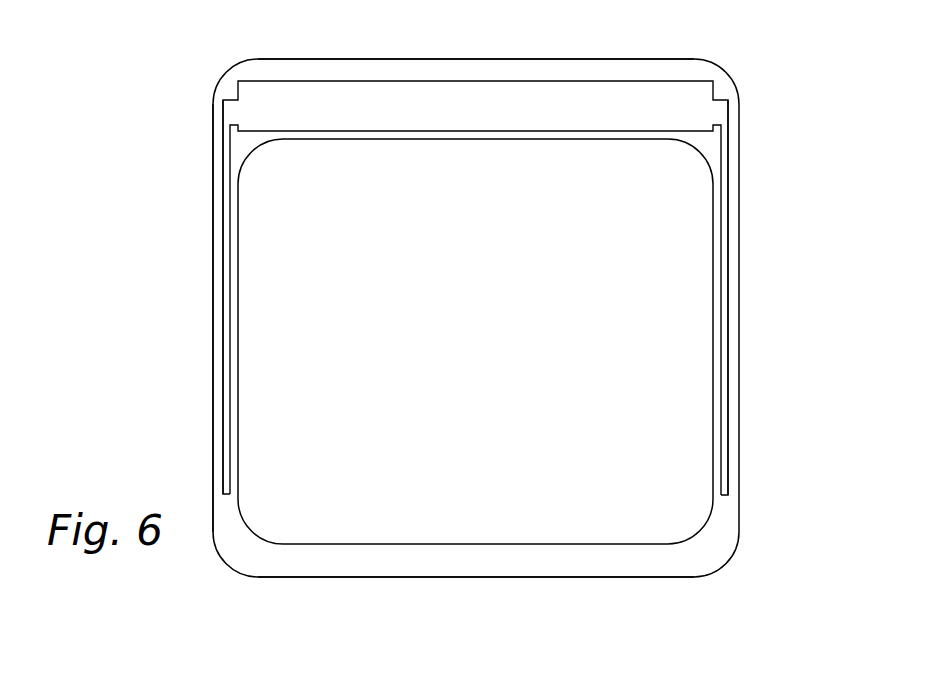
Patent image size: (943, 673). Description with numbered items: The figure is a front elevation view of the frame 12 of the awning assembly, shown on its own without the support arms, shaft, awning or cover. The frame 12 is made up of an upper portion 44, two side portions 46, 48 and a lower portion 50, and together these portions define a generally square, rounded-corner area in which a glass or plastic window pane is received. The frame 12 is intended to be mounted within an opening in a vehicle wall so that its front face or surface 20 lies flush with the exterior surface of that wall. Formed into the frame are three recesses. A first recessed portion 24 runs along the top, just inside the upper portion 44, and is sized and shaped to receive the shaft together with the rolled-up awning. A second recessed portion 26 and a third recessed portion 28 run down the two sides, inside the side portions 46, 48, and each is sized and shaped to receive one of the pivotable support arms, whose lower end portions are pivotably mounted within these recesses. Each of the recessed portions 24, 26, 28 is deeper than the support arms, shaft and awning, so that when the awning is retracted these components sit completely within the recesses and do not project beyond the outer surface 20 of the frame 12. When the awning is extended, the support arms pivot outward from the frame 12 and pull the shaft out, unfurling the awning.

The frame 12 is at (725, 70).
The front face or surface 20 is at (772, 571).
The first recessed portion 24 is at (342, 95).
The second recessed portion 26 is at (728, 325).
The third recessed portion 28 is at (222, 305).
The upper portion 44 is at (471, 66).
The side portion 46 is at (211, 238).
The side portion 48 is at (730, 255).
The lower portion 50 is at (550, 580).